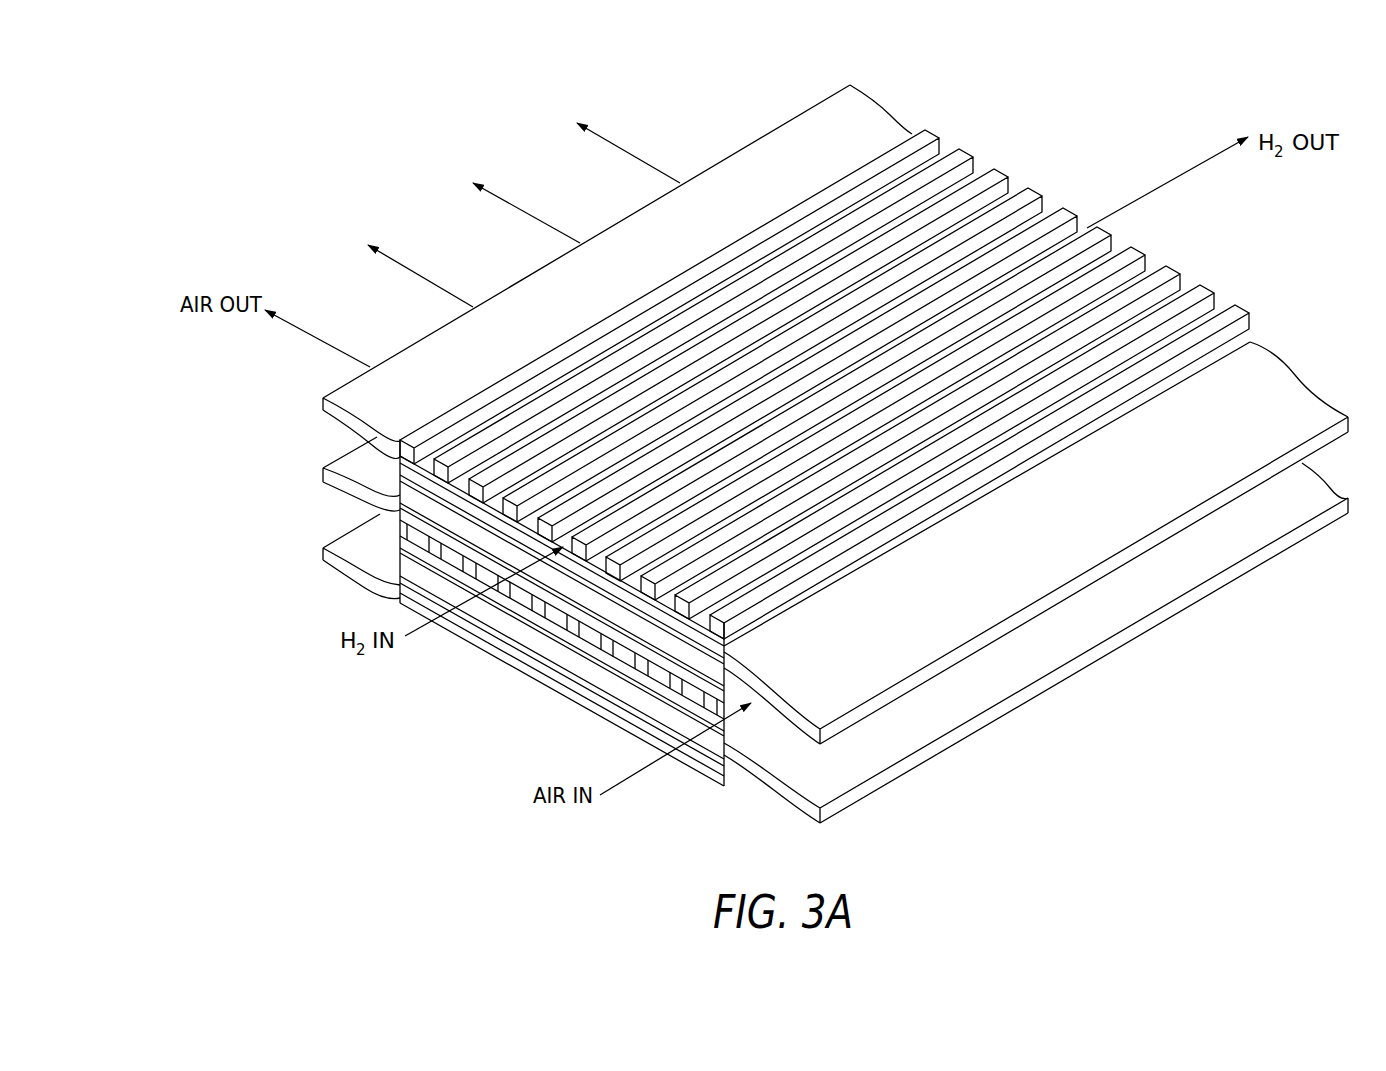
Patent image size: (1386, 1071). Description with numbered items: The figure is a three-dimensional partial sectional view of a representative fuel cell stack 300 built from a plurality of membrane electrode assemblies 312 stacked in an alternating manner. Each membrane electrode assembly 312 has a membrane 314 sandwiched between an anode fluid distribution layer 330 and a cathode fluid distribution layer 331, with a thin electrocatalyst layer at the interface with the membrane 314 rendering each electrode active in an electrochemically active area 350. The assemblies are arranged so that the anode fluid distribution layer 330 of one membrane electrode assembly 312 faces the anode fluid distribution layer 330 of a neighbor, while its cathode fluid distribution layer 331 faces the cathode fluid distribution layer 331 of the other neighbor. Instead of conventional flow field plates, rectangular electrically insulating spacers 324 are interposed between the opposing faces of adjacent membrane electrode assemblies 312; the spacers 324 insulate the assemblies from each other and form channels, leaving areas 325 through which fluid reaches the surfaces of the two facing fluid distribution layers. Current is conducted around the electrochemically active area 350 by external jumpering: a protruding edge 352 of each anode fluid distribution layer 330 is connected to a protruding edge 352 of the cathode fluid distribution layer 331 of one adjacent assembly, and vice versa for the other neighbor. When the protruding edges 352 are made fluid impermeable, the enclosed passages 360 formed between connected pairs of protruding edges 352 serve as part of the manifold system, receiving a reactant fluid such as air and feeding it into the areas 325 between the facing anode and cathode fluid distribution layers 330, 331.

The fuel cell stack 300 is at (1292, 73).
The membrane electrode assembly 312 is at (215, 405).
The membrane 314 is at (400, 467).
The electrically insulating spacer 324 is at (962, 152).
The area 325 is at (1157, 258).
The anode fluid distribution layer 330 is at (400, 450).
The cathode fluid distribution layer 331 is at (366, 492).
The electrochemically active area 350 is at (1277, 283).
The protruding edge 352 is at (932, 120).
The enclosed passage 360 is at (720, 782).